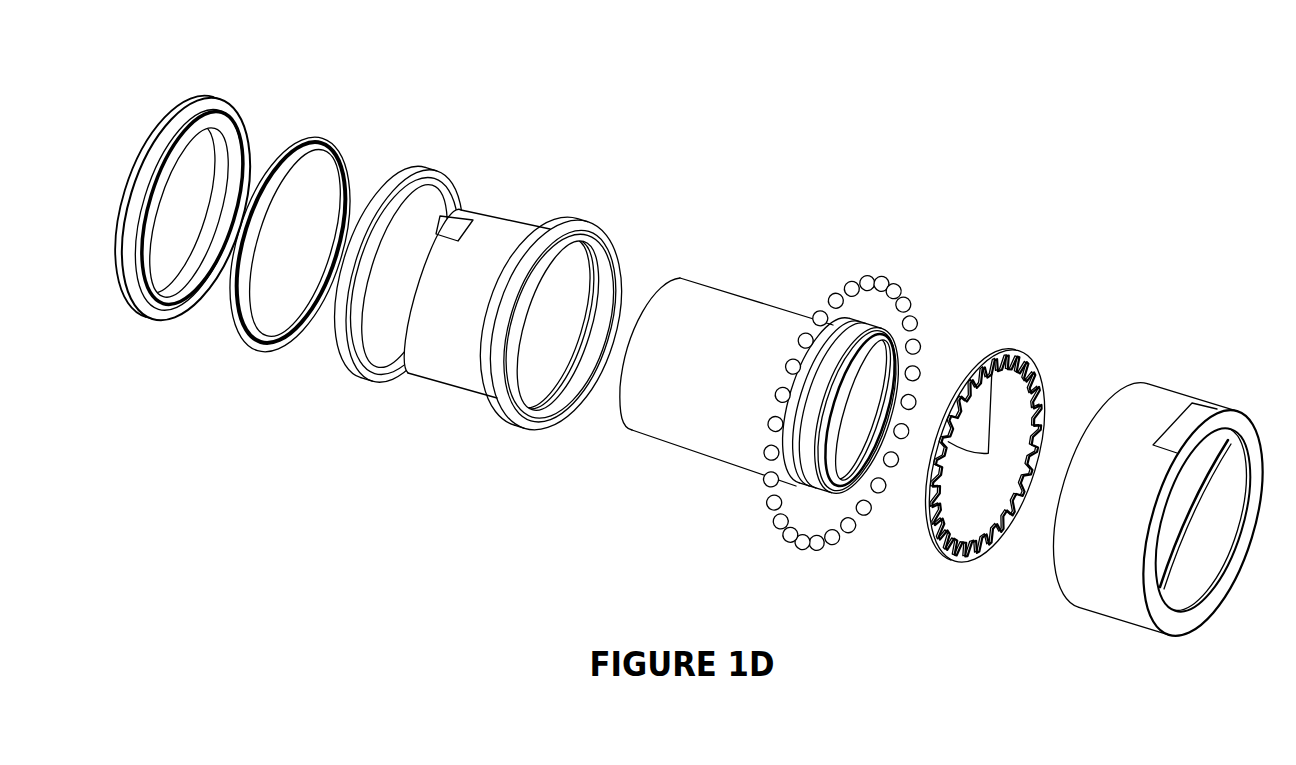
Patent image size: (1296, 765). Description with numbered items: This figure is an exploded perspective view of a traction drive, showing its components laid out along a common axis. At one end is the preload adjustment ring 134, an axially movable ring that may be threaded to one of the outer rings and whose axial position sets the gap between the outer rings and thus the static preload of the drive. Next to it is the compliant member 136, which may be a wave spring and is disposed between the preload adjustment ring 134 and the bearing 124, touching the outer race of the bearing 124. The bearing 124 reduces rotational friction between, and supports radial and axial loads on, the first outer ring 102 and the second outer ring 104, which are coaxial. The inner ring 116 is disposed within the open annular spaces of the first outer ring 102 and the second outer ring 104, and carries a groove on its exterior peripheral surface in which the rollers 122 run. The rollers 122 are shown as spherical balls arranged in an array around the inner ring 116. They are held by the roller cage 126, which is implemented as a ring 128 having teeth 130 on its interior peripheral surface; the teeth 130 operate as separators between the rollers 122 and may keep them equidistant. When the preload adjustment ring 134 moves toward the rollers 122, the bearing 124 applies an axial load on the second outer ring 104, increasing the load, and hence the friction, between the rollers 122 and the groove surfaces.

The first outer ring 102 is at (1145, 381).
The second outer ring 104 is at (570, 218).
The inner ring 116 is at (716, 276).
The rollers 122 is at (841, 280).
The bearing 124 is at (410, 168).
The roller cage 126 is at (990, 350).
The ring 128 is at (1023, 355).
The teeth 130 is at (975, 430).
The preload adjustment ring 134 is at (175, 122).
The compliant member 136 is at (307, 142).